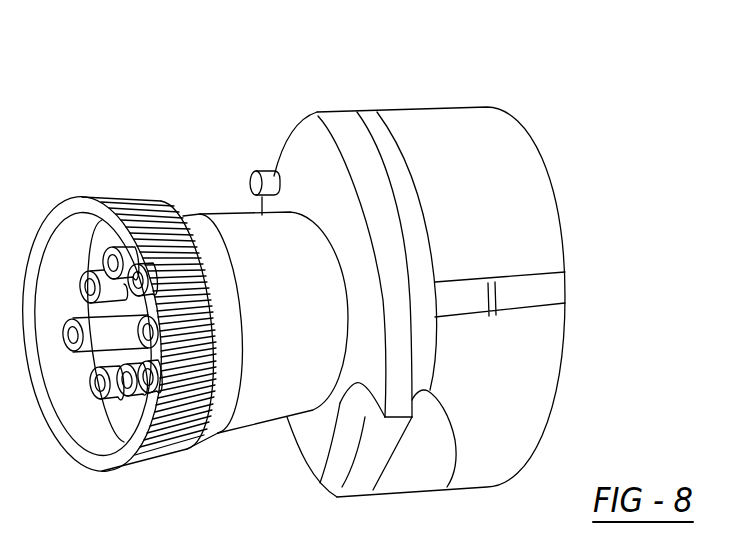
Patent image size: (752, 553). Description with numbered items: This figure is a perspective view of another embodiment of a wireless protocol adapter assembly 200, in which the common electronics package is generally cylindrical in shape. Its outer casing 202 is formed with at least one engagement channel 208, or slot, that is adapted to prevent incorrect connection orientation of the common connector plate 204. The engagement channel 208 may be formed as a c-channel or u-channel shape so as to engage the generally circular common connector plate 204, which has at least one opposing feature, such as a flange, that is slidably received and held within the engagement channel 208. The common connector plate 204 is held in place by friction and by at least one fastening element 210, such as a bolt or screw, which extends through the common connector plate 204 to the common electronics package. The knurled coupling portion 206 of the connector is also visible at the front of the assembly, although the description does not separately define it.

The wireless protocol adapter assembly 200 is at (607, 122).
The outer casing 202 is at (562, 367).
The common connector plate 204 is at (290, 120).
The coupling nut 206 is at (213, 215).
The engagement channel 208 is at (447, 487).
The fastening element 210 is at (267, 170).